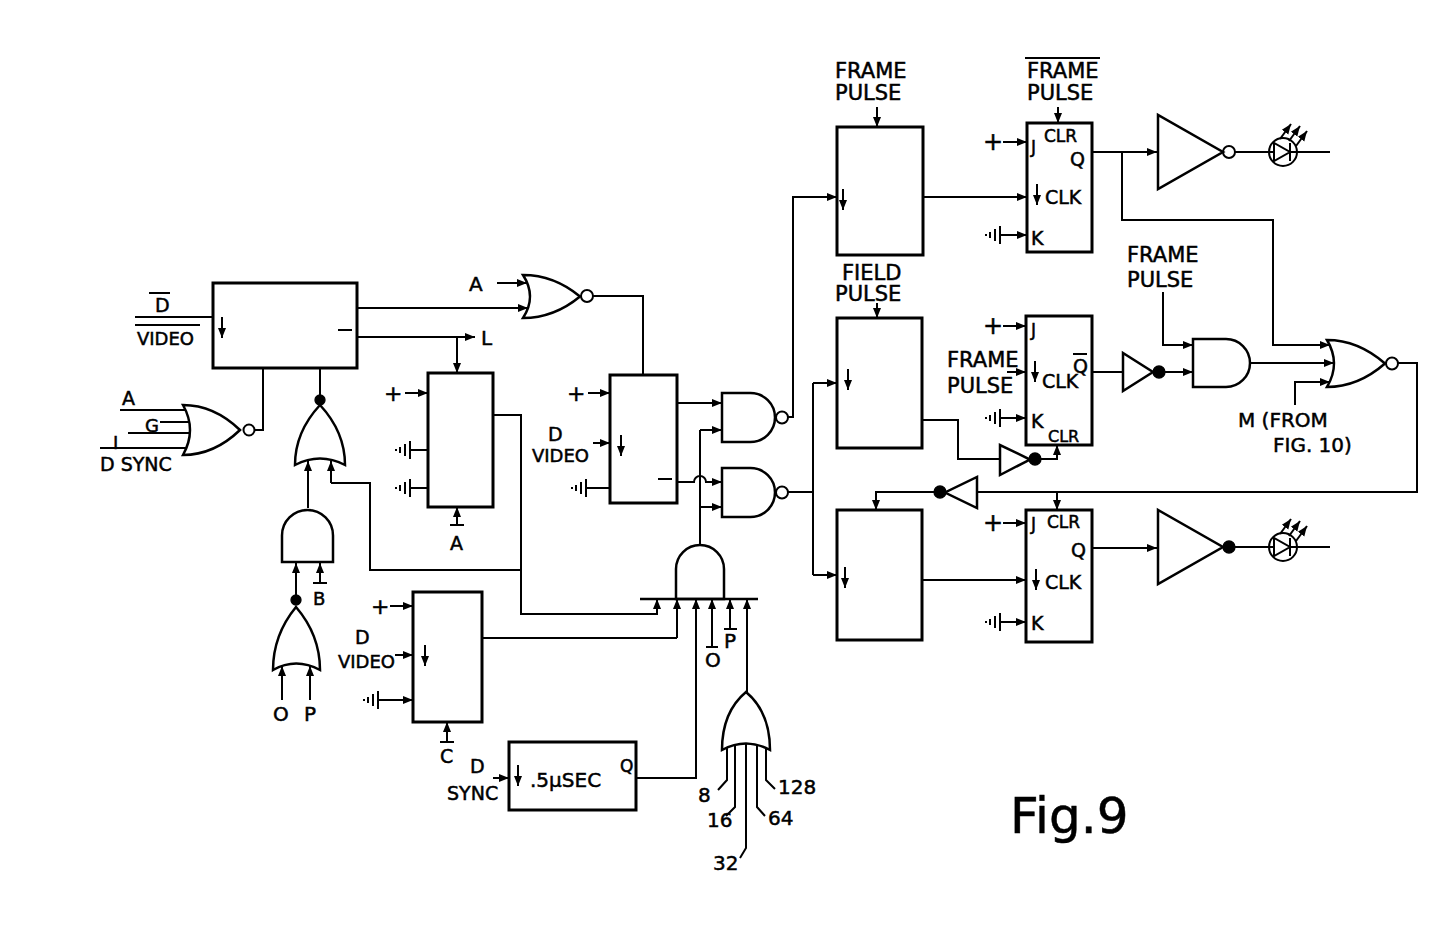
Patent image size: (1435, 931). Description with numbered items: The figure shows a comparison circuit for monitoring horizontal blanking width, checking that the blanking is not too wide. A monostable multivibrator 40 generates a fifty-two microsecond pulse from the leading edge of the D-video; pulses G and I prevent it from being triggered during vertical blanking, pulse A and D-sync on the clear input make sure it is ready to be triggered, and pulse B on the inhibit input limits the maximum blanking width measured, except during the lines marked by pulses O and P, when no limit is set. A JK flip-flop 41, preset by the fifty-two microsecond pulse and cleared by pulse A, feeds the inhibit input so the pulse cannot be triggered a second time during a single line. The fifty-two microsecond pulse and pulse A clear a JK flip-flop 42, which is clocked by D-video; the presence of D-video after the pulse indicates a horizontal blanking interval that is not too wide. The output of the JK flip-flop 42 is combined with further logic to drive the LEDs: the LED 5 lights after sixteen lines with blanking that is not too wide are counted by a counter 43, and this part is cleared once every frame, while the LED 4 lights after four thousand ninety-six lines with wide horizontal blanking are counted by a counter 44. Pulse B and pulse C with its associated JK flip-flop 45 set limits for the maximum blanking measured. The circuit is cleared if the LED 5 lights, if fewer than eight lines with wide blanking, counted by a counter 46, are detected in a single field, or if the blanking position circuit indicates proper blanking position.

The monostable multivibrator 40 is at (272, 290).
The JK flip-flop 41 is at (497, 387).
The JK flip-flop 42 is at (677, 377).
The counter 43 is at (912, 134).
The counter 44 is at (915, 561).
The JK flip-flop 45 is at (485, 677).
The counter 46 is at (915, 331).
The LED 5 is at (1294, 163).
The LED 4 is at (1294, 558).